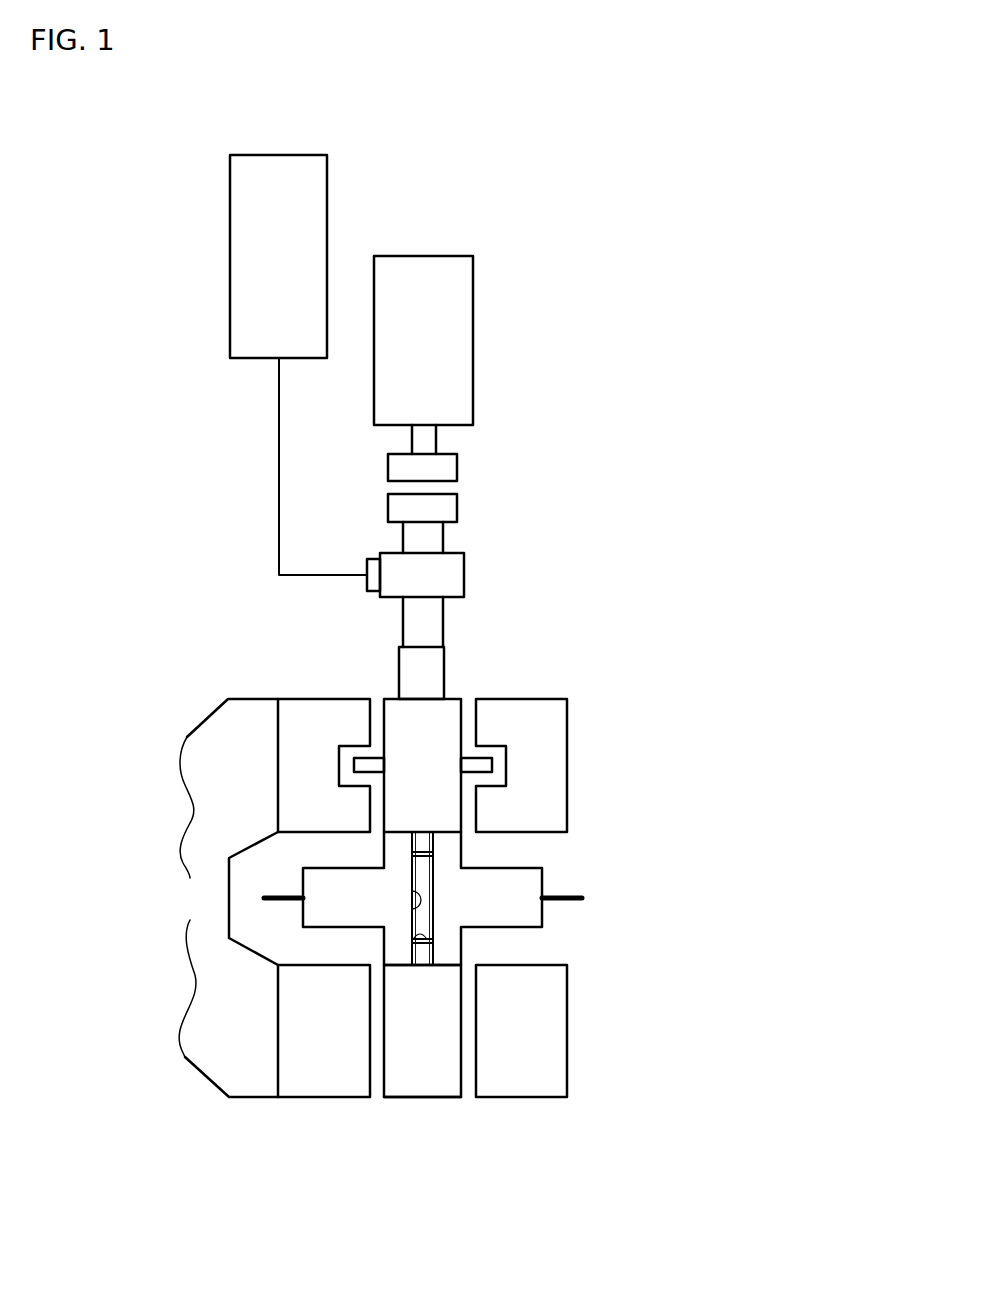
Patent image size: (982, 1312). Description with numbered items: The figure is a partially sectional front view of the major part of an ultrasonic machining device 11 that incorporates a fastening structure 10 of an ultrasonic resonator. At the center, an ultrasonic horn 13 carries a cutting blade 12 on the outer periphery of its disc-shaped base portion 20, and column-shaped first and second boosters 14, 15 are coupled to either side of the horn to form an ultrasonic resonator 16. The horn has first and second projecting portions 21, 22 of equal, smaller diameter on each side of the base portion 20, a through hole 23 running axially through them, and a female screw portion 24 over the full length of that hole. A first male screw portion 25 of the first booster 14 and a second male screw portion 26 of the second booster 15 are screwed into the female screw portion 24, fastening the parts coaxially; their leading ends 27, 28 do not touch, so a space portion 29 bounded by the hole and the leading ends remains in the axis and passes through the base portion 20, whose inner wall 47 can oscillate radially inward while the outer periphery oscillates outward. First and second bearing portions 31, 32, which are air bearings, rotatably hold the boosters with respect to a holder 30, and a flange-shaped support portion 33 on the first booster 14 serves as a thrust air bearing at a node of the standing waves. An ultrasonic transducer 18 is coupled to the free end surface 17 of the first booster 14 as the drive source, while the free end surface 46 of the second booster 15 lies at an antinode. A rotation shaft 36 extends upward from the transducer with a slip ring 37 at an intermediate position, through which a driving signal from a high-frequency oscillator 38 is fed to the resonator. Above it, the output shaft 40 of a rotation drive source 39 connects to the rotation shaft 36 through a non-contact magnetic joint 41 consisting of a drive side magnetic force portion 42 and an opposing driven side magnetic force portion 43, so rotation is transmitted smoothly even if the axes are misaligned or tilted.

The fastening structure of an ultrasonic resonator 10 is at (660, 863).
The ultrasonic machining device 11 is at (590, 138).
The cutting blade 12 is at (568, 893).
The ultrasonic horn 13 is at (496, 887).
The first booster 14 is at (286, 737).
The second booster 15 is at (410, 1042).
The ultrasonic resonator 16 is at (435, 1105).
The free end surface 17 is at (393, 700).
The ultrasonic transducer 18 is at (428, 672).
The base portion 20 is at (513, 880).
The first projecting portion 21 is at (447, 846).
The second projecting portion 22 is at (448, 948).
The through hole 23 is at (437, 930).
The female screw portion 24 is at (433, 887).
The first male screw portion 25 is at (423, 847).
The second male screw portion 26 is at (422, 955).
The leading end of first male screw portion 27 is at (407, 870).
The leading end of second male screw portion 28 is at (413, 900).
The space portion 29 is at (454, 933).
The holder 30 is at (212, 1013).
The first bearing portion 31 is at (493, 692).
The second bearing portion 32 is at (570, 1068).
The support portion 33 is at (368, 765).
The rotation shaft 36 is at (417, 623).
The slip ring 37 is at (448, 567).
The high-frequency oscillator 38 is at (265, 252).
The rotation drive source 39 is at (442, 310).
The output shaft 40 is at (427, 440).
The non-contact magnetic joint 41 is at (522, 483).
The drive side magnetic force portion 42 is at (448, 460).
The driven side magnetic force portion 43 is at (448, 512).
The free end surface 46 is at (400, 1100).
The inner wall 47 is at (410, 935).